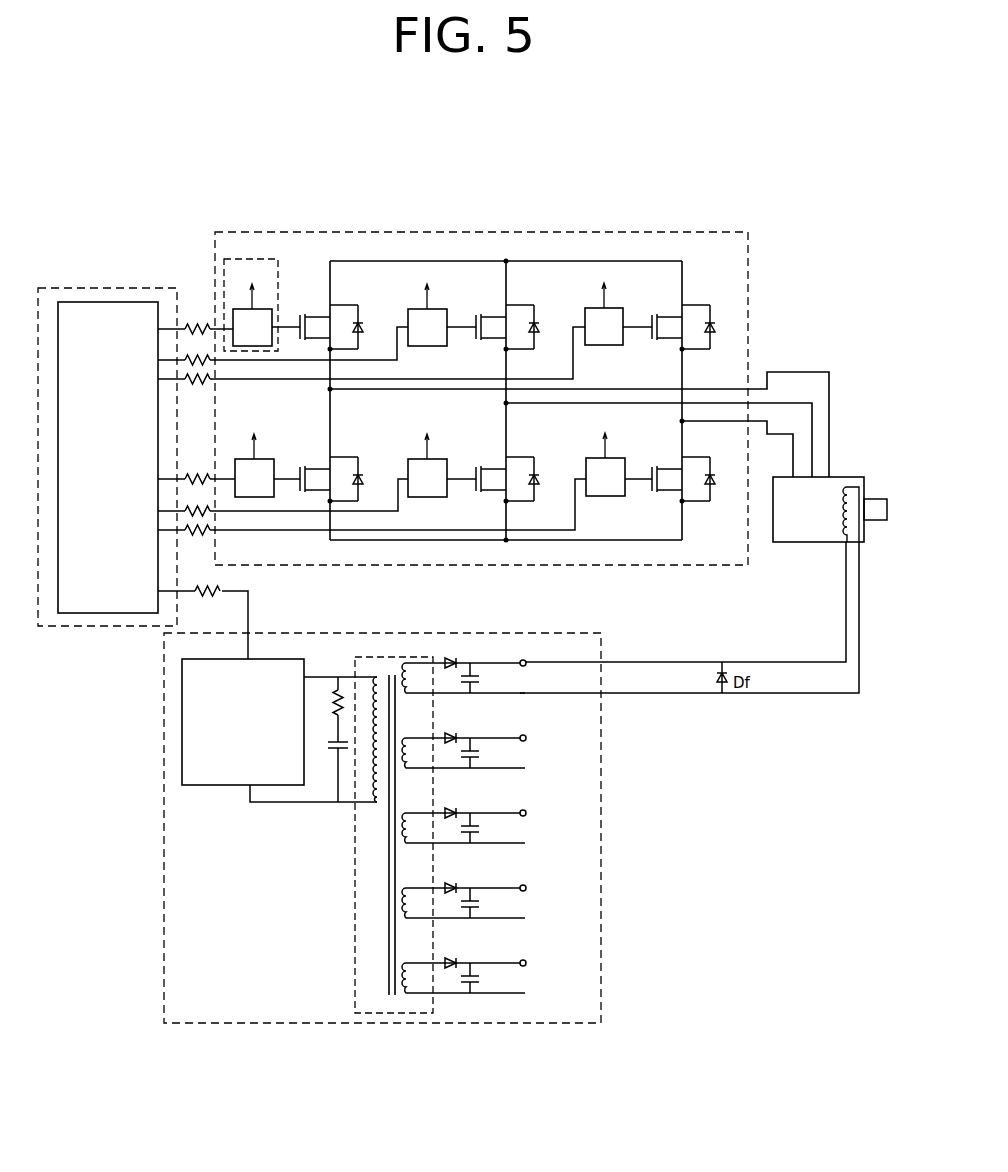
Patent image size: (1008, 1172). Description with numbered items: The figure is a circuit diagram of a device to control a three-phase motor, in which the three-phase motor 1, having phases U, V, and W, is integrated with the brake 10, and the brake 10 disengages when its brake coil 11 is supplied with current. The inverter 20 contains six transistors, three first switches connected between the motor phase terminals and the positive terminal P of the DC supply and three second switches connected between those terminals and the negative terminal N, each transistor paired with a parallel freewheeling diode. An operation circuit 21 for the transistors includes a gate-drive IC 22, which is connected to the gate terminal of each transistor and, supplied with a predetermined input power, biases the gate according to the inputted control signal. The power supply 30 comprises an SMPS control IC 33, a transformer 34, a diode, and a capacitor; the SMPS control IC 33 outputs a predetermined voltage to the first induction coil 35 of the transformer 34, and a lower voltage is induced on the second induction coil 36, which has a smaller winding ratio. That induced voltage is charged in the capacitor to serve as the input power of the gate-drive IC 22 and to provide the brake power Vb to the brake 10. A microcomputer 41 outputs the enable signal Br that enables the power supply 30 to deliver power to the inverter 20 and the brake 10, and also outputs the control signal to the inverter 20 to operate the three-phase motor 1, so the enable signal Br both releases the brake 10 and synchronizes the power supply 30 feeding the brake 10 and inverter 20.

The 3-phase motor 1 is at (818, 500).
The brake 10 is at (857, 477).
The brake coil 11 is at (855, 542).
The inverter 20 is at (418, 232).
The operation circuit 21 is at (262, 259).
The gate-drive IC 22 is at (396, 366).
The power supply 30 is at (601, 763).
The SMPS control IC 33 is at (182, 722).
The transformer 34 is at (352, 665).
The first induction coil 35 is at (370, 677).
The second induction coil 36 is at (408, 663).
The microcomputer 41 is at (100, 302).